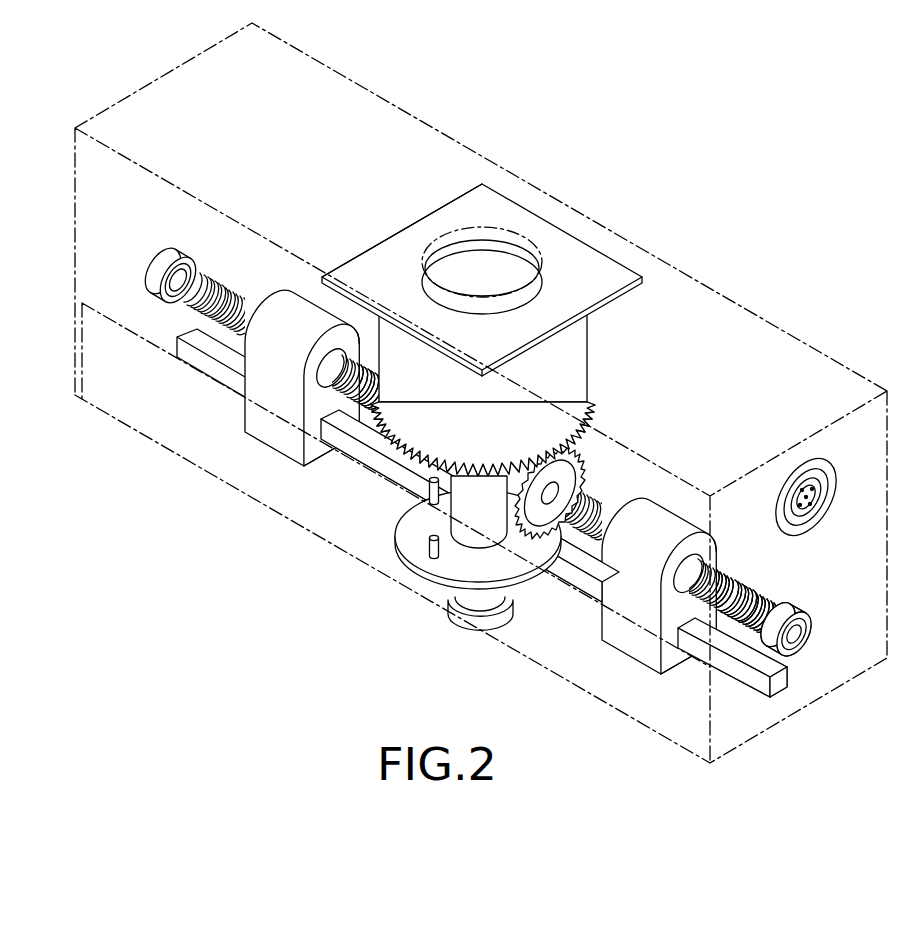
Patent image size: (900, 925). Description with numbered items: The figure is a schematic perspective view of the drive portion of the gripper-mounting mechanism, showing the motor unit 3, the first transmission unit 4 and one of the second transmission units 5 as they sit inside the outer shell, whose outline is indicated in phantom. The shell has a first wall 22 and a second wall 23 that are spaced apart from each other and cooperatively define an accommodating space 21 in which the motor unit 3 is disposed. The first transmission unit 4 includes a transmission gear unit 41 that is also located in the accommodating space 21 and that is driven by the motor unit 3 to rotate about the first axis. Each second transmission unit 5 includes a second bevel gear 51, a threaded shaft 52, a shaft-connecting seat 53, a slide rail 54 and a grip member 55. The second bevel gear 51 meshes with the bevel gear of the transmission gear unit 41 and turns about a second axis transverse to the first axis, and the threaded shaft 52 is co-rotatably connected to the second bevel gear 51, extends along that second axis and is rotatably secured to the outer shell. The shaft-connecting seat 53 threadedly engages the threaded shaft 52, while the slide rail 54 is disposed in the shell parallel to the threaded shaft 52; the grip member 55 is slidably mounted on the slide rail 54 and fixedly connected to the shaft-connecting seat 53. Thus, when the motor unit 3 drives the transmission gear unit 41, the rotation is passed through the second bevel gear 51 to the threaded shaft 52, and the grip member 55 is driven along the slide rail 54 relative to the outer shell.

The motor unit 3 is at (597, 363).
The first transmission unit 4 is at (599, 421).
The transmission gear unit 41 is at (592, 436).
The second transmission unit 5 is at (253, 283).
The second bevel gear 51 is at (520, 523).
The threaded shaft 52 is at (583, 535).
The shaft-connecting seat 53 is at (270, 383).
The slide rail 54 is at (582, 577).
The grip member 55 is at (283, 443).
The accommodating space 21 is at (400, 217).
The first wall 22 is at (130, 126).
The second wall 23 is at (130, 430).